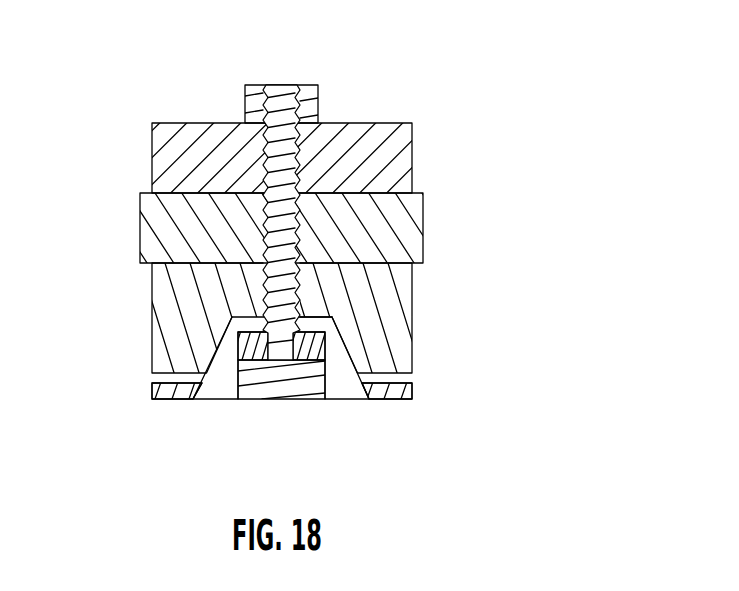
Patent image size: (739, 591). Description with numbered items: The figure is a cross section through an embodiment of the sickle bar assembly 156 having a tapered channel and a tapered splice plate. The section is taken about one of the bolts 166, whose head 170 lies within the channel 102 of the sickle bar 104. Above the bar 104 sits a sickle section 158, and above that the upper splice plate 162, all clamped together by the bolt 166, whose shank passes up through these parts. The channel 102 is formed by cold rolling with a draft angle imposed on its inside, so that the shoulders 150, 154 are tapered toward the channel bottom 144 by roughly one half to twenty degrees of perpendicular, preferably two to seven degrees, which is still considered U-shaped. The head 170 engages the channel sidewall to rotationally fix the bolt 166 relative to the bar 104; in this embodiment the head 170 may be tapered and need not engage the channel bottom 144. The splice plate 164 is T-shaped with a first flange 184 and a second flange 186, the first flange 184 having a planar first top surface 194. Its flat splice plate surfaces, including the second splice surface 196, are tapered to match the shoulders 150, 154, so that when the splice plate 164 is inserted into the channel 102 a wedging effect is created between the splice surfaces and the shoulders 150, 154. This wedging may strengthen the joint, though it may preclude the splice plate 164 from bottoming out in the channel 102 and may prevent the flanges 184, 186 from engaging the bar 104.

The sickle bar assembly 156 is at (462, 68).
The bolt 166 is at (282, 90).
The upper splice plate 162 is at (177, 152).
The sickle section 158 is at (157, 232).
The channel 102 is at (243, 315).
The sickle bar 104 is at (385, 292).
The channel bottom 144 is at (306, 316).
The channel sidewall (shoulder) 150 is at (340, 326).
The channel sidewall (shoulder) 154 is at (230, 318).
The first top surface of the first flange 194 is at (222, 345).
The second splice surface 196 is at (346, 352).
The head 170 is at (268, 383).
The splice plate 164 is at (397, 392).
The first flange 184 is at (172, 398).
The second flange 186 is at (372, 392).